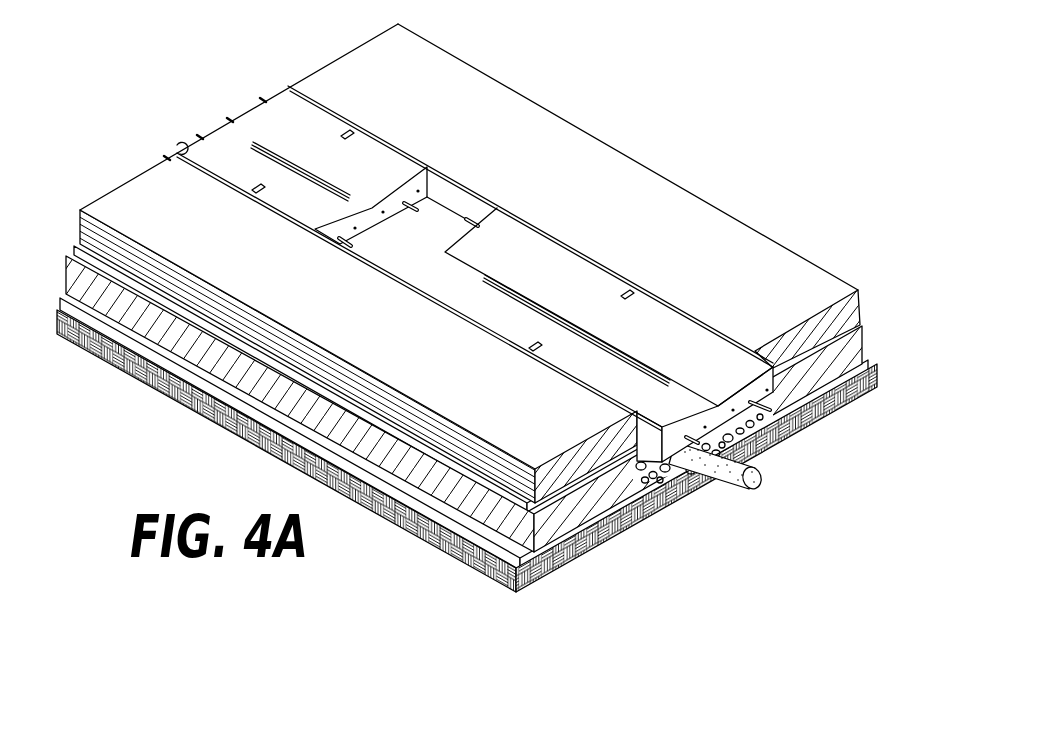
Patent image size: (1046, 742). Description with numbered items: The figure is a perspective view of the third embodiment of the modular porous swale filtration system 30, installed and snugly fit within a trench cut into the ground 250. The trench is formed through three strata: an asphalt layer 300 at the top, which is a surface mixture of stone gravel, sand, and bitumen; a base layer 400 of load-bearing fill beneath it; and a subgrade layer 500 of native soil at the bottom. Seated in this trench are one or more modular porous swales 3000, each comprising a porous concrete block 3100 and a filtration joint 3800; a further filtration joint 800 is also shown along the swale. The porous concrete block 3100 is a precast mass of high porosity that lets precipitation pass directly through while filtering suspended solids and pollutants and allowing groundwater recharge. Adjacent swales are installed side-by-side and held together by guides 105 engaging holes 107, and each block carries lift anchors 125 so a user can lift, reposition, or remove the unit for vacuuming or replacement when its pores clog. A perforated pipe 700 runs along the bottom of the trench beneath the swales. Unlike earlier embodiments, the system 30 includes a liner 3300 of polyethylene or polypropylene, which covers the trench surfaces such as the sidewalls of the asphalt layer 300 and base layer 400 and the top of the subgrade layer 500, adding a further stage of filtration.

The modular porous swale filtration system 30 is at (737, 124).
The ground 250 is at (53, 207).
The asphalt layer 300 is at (862, 279).
The base layer 400 is at (864, 318).
The subgrade layer 500 is at (866, 355).
The modular porous swale 3000 is at (531, 212).
The porous concrete block 3100 is at (587, 287).
The liner 3300 is at (217, 174).
The filtration joint 3800 is at (653, 362).
The filtration joint 800 is at (304, 157).
The lift anchors 125 is at (527, 336).
The holes 107 is at (668, 446).
The guides 105 is at (770, 410).
The perforated pipe 700 is at (741, 489).